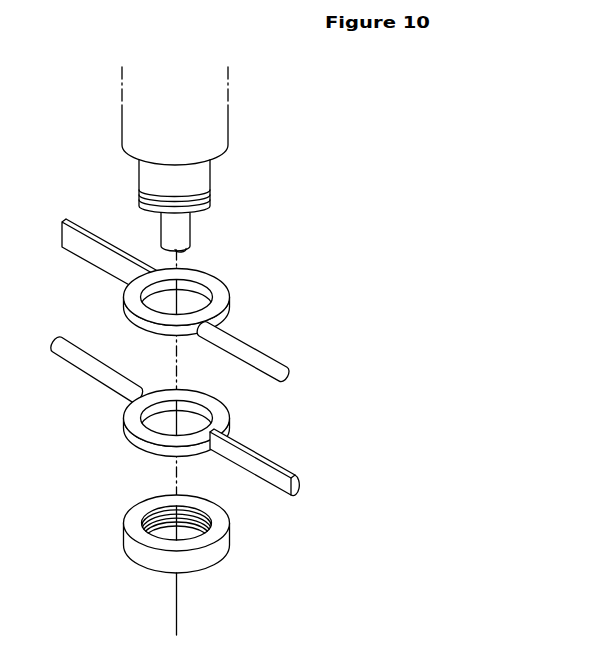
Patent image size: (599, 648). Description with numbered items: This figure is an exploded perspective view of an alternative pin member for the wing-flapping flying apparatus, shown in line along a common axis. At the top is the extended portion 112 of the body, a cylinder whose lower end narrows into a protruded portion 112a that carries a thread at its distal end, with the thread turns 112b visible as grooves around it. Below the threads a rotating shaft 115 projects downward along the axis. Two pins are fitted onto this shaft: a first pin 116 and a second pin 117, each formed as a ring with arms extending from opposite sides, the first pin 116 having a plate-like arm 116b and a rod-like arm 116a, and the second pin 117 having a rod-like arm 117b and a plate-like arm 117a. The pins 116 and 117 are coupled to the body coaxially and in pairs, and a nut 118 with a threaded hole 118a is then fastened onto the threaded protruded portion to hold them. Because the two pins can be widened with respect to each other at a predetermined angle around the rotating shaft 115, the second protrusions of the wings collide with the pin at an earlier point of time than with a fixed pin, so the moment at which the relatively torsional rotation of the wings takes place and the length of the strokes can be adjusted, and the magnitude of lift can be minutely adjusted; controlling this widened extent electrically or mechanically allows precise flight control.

The extended portion 112 is at (210, 112).
The protruded portion 112a is at (200, 175).
The threads 112b is at (212, 196).
The rotating shaft 115 is at (183, 231).
The first pin 116 is at (232, 298).
The first ring arm 116a is at (262, 360).
The first ring plate arm 116b is at (85, 250).
The second pin 117 is at (234, 419).
The second ring plate arm 117a is at (270, 476).
The second ring arm 117b is at (82, 363).
The nut 118 is at (210, 558).
The threaded hole 118a is at (187, 520).